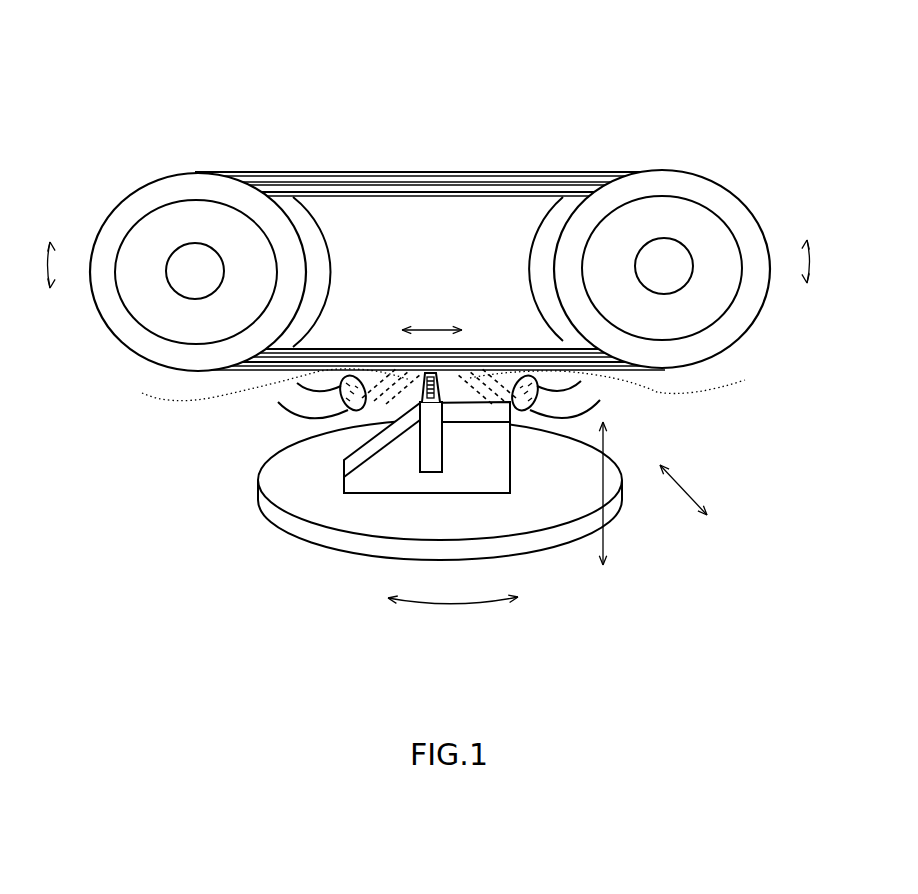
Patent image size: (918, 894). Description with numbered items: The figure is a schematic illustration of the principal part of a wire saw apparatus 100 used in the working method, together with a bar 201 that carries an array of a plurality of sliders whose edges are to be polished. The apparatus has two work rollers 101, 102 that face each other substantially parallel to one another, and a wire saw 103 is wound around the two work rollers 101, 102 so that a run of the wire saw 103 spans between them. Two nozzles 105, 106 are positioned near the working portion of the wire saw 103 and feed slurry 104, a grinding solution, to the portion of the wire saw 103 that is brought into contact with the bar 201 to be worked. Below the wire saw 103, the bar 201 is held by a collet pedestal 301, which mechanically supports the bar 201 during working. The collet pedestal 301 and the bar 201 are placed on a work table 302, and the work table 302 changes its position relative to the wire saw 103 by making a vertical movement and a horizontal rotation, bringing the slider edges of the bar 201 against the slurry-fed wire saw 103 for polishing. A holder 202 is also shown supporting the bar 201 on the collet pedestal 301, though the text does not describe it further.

The wire saw apparatus 100 is at (423, 128).
The work roller 101 is at (178, 182).
The work roller 102 is at (658, 182).
The wire saw 103 is at (302, 172).
The slurry 104 is at (442, 385).
The nozzle 105 is at (288, 412).
The nozzle 106 is at (575, 403).
The bar 201 is at (427, 380).
The blade holder 202 is at (433, 442).
The collet pedestal 301 is at (500, 473).
The work table 302 is at (357, 545).